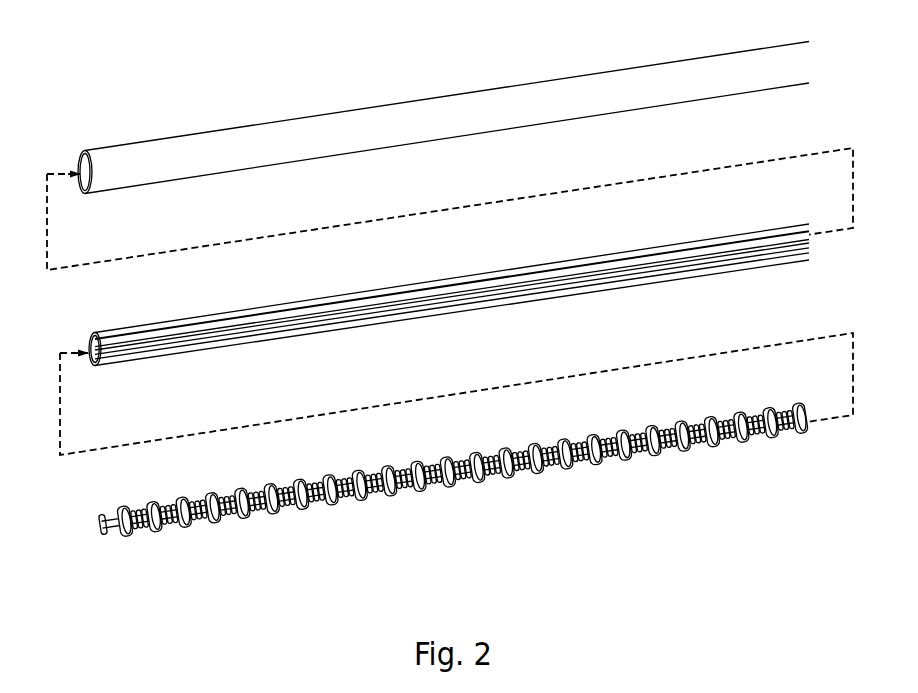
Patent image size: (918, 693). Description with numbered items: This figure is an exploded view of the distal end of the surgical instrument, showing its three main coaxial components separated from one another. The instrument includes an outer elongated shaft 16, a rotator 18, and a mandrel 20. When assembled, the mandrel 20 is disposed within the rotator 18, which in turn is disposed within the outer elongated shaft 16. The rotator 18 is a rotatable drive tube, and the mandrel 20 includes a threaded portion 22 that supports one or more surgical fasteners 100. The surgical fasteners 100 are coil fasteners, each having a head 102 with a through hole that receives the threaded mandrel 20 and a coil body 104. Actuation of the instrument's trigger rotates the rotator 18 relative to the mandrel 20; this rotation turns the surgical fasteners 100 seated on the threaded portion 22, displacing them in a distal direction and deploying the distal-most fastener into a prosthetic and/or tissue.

The outer elongated shaft 16 is at (322, 114).
The rotator 18 is at (393, 289).
The mandrel 20 is at (257, 546).
The surgical fasteners 100 is at (442, 461).
The head 102 is at (423, 485).
The coil body 104 is at (407, 486).
The threaded portion 22 is at (411, 489).